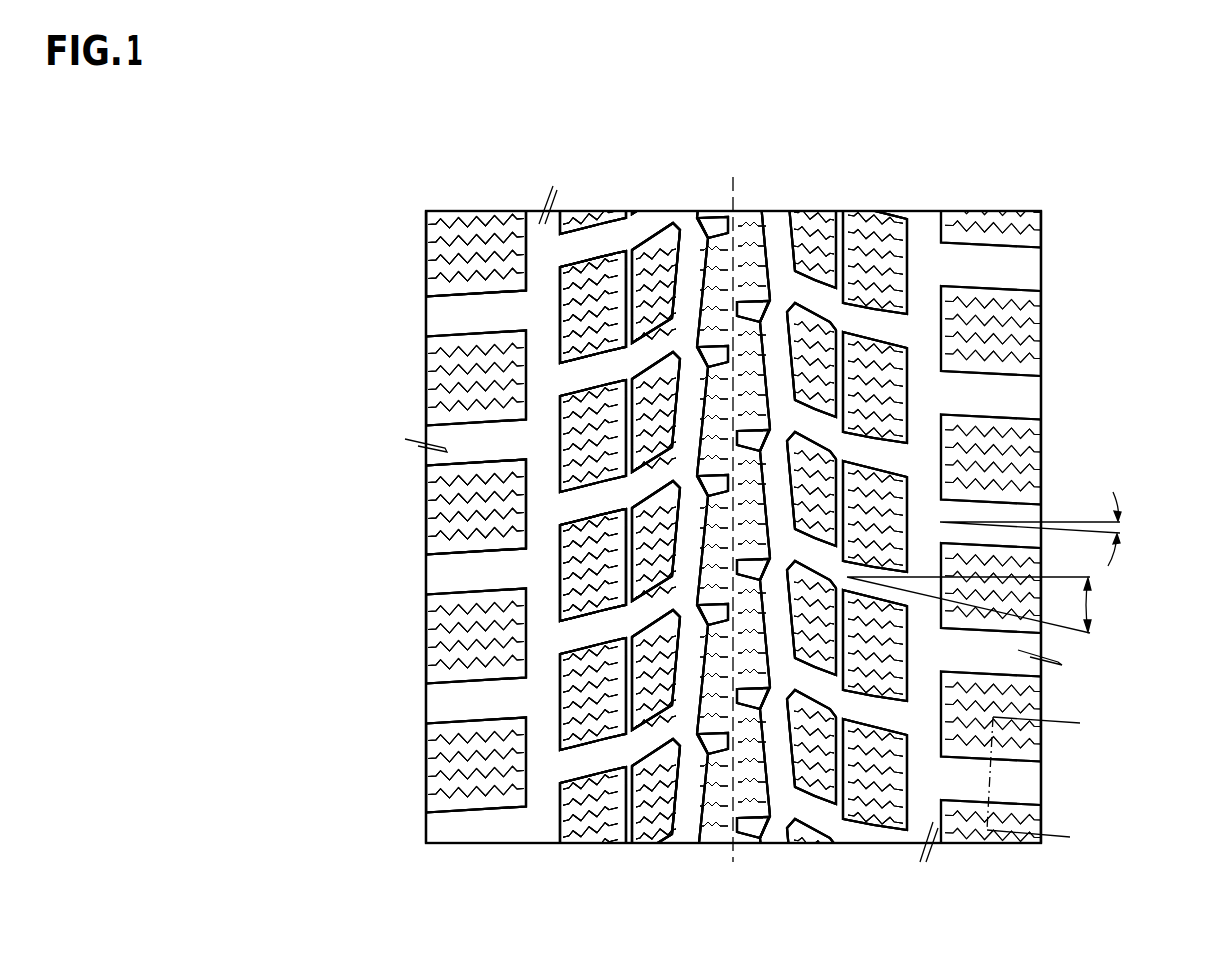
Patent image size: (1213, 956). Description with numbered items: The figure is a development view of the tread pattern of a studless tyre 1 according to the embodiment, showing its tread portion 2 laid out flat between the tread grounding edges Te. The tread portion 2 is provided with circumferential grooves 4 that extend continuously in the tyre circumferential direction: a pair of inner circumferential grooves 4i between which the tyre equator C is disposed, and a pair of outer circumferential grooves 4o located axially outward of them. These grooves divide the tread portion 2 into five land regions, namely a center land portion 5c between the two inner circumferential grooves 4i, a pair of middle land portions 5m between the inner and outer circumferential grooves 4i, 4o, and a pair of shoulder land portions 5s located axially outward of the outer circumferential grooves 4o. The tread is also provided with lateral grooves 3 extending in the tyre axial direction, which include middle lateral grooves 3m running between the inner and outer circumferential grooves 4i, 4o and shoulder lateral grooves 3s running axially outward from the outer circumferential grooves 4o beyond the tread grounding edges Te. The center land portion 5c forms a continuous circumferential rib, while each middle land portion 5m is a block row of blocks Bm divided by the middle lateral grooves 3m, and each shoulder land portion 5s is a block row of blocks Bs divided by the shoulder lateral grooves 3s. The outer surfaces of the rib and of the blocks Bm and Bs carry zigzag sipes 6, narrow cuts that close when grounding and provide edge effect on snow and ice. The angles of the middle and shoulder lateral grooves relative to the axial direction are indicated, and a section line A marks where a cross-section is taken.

The tyre 1 is at (1018, 150).
The tread portion 2 is at (1058, 180).
The lateral grooves 3 is at (737, 525).
The shoulder lateral grooves 3s is at (477, 315).
The middle lateral grooves 3m is at (597, 372).
The circumferential grooves 4 is at (733, 522).
The outer circumferential grooves 4o is at (545, 823).
The inner circumferential grooves 4i is at (687, 825).
The shoulder land portions 5s is at (470, 207).
The middle land portions 5m is at (600, 207).
The center land portion 5c is at (755, 207).
The sipes 6 is at (738, 262).
The tread grounding edges Te is at (427, 315).
The shoulder blocks Bs is at (498, 217).
The middle blocks Bm is at (617, 250).
The tyre equator C is at (733, 503).
The section line A- A is at (1048, 786).